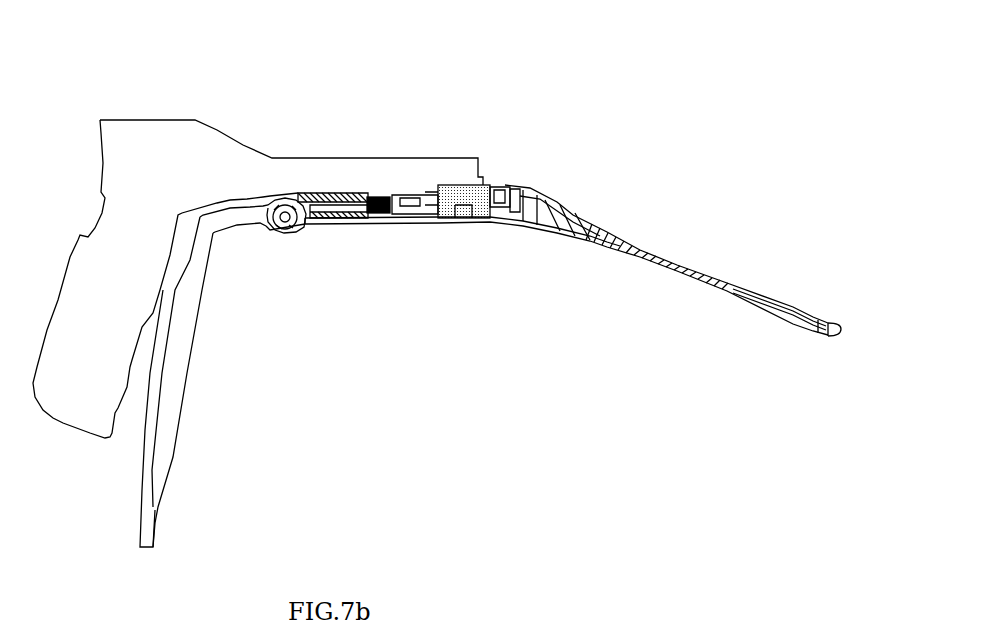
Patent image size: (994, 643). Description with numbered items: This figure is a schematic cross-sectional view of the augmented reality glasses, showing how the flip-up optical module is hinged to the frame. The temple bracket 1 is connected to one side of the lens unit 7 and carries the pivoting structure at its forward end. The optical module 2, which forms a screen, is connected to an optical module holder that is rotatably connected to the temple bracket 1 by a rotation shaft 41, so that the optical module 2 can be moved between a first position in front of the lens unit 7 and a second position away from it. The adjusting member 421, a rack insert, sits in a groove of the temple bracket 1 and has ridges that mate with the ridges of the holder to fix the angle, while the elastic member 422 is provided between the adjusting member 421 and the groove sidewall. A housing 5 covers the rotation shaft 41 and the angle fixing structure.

The temple bracket 1 is at (630, 250).
The optical module 2 is at (118, 177).
The housing 5 is at (513, 228).
The lens unit 7 is at (172, 403).
The rotation shaft 41 is at (478, 185).
The adjusting member 421 is at (387, 197).
The elastic member 422 is at (365, 212).